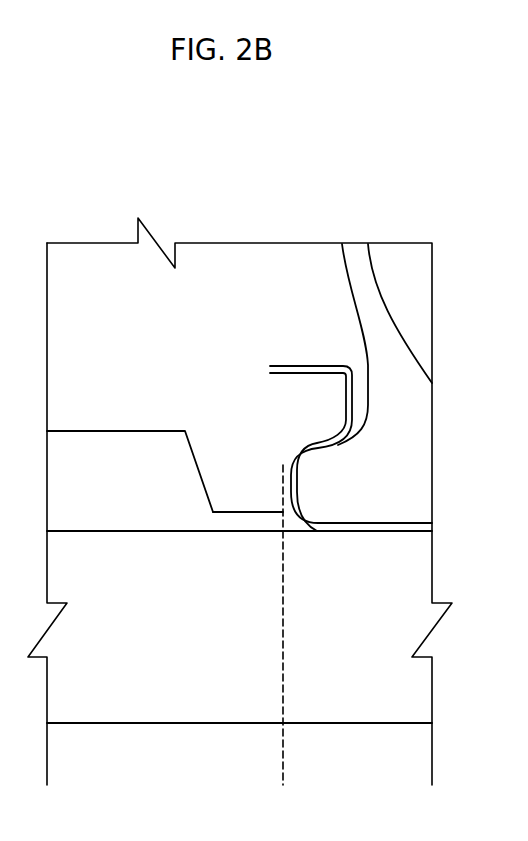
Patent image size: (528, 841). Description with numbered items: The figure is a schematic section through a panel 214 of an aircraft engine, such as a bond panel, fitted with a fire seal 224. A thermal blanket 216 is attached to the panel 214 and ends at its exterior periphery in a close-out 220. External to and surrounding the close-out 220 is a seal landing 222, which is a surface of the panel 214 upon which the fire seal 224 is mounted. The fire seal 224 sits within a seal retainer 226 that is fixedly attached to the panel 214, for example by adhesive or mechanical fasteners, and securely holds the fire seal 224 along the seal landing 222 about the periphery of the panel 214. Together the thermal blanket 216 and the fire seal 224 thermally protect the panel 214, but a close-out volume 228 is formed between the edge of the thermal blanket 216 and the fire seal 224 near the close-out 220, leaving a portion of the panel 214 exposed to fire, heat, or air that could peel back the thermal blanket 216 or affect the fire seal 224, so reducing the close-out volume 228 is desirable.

The panel 214 is at (93, 695).
The thermal blanket 216 is at (113, 450).
The close-out 220 is at (244, 522).
The seal landing 222 is at (378, 633).
The fire seal 224 is at (387, 370).
The seal retainer 226 is at (303, 366).
The close-out volume 228 is at (232, 386).